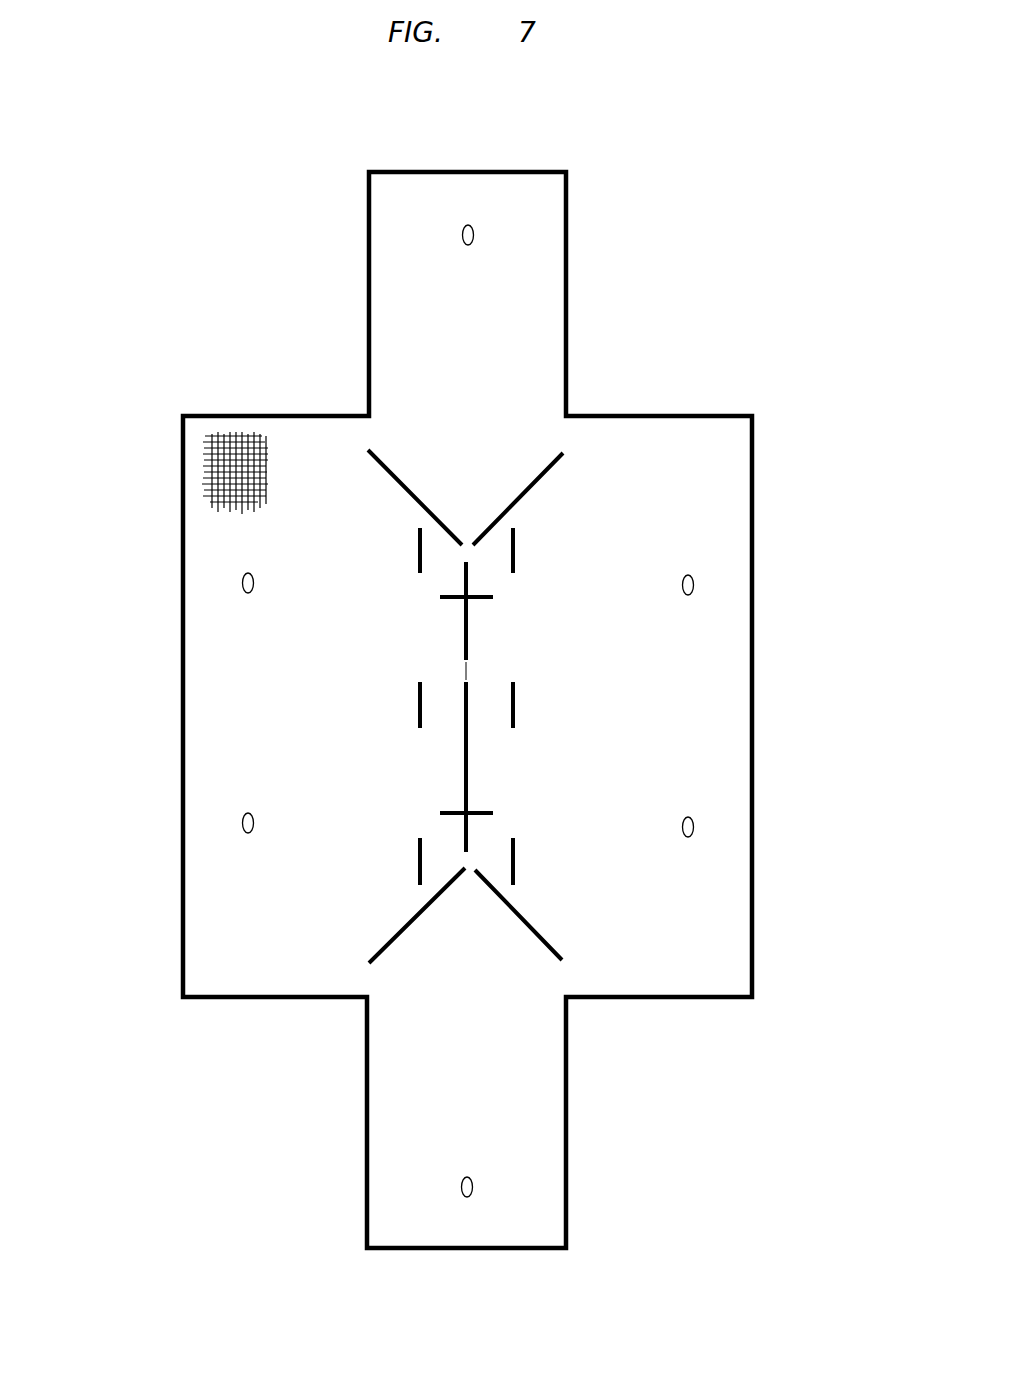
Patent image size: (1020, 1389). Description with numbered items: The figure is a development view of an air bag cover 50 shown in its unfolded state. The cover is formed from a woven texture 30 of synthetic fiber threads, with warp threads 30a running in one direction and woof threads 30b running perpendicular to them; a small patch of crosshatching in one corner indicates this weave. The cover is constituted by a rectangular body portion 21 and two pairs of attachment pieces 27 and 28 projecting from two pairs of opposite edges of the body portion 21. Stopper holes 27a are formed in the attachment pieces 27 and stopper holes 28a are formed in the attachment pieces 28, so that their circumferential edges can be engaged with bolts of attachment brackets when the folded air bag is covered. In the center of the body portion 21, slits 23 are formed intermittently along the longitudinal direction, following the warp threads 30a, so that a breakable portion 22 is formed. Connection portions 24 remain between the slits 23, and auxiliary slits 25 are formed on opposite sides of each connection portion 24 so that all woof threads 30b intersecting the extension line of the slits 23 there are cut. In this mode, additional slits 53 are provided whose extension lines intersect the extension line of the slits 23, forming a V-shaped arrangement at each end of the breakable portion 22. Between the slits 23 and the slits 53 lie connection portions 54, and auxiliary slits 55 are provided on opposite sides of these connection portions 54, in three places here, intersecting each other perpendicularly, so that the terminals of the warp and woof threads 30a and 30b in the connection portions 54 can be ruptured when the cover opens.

The air bag cover 50 is at (283, 276).
The body portion 21 is at (555, 437).
The attachment pieces 28 is at (547, 228).
The stopper holes 28a is at (472, 225).
The woven texture 30 is at (204, 426).
The warp threads 30a is at (222, 437).
The woof threads 30b is at (265, 437).
The slits 53 is at (398, 478).
The auxiliary slits 55 is at (414, 551).
The connection portions 54 is at (467, 555).
The slits 23 is at (468, 617).
The connection portions 24 is at (468, 668).
The auxiliary slits 25 is at (414, 712).
The stopper holes 27a is at (695, 583).
The attachment pieces 27 is at (735, 683).
The breakable portion 22 is at (388, 864).